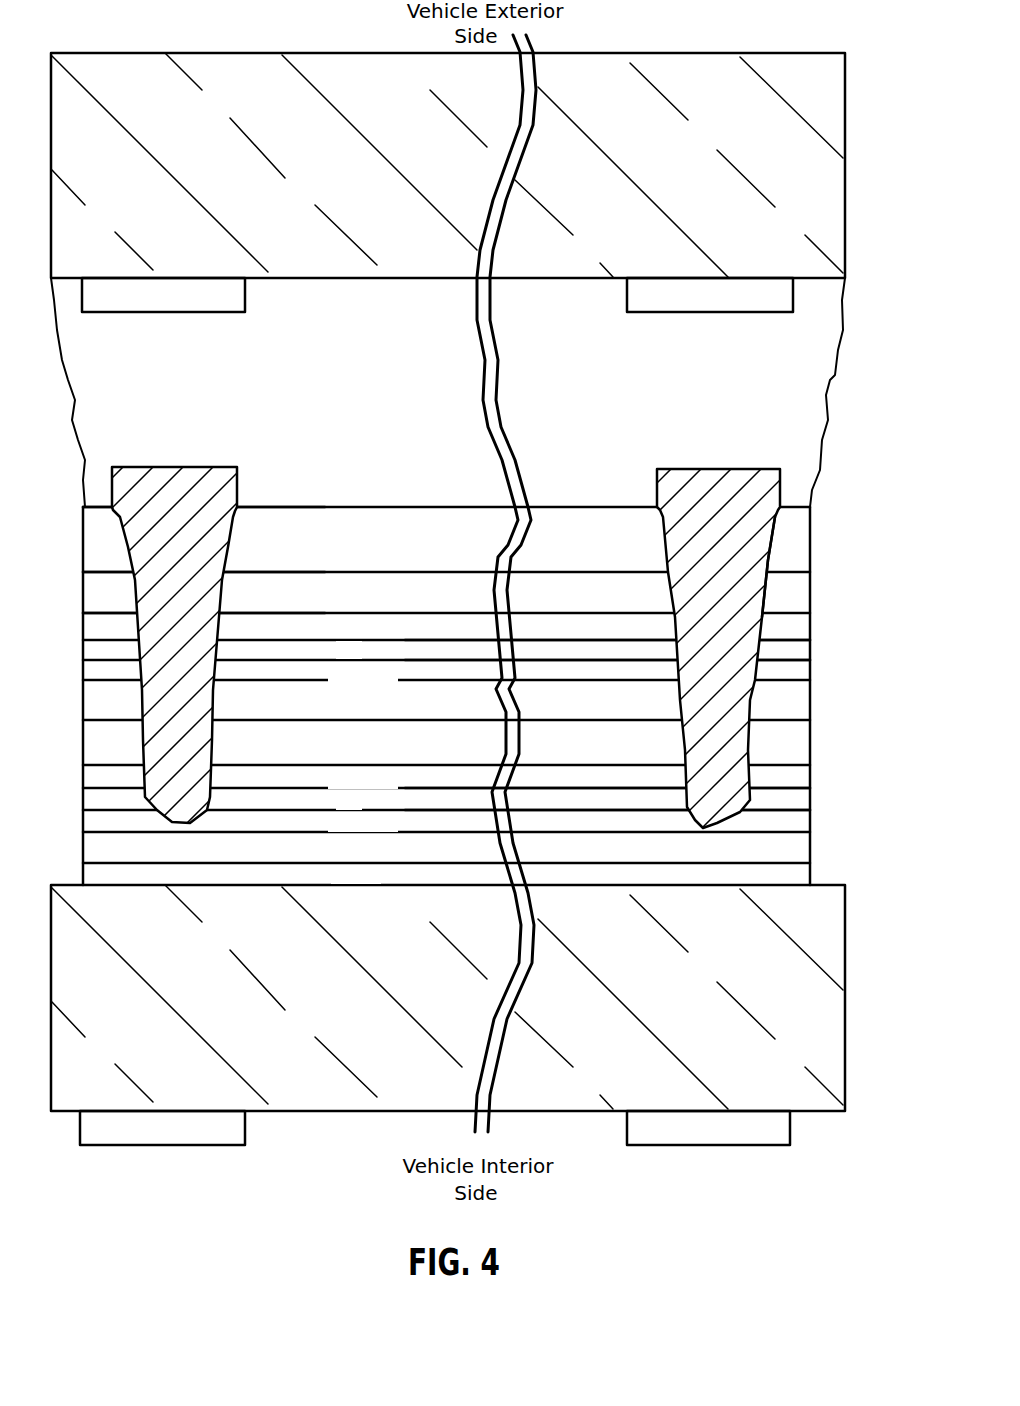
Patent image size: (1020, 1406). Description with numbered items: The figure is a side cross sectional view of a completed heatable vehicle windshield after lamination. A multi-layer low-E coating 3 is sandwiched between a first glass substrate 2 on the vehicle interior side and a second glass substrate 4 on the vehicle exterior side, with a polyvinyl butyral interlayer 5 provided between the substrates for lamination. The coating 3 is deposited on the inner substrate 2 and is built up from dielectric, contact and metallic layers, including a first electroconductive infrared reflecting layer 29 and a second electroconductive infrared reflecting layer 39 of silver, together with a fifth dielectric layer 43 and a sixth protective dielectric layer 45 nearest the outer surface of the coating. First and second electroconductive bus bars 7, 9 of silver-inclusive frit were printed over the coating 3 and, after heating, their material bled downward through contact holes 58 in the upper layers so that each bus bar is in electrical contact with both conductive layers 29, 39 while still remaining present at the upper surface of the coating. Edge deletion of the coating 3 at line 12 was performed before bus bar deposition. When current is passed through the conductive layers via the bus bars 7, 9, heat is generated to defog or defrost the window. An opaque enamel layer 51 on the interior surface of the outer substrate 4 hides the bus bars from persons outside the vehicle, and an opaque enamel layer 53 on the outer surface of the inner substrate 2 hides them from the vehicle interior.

The first glass substrate 2 is at (825, 1013).
The multi-layer low-E coating 3 is at (828, 880).
The second glass substrate 4 is at (835, 125).
The polyvinyl butyral interlayer 5 is at (806, 418).
The first electroconductive bus bar 7 is at (185, 488).
The second electroconductive bus bar 9 is at (750, 476).
The edge deletion line 12 is at (83, 863).
The first electroconductive metallic IR reflecting layer 29 is at (778, 800).
The second electroconductive metallic IR reflecting layer 39 is at (576, 655).
The fifth dielectric layer 43 is at (286, 597).
The sixth protective dielectric layer 45 is at (268, 522).
The opaque enamel layer 51 is at (173, 307).
The opaque enamel layer 53 is at (165, 1135).
The contact hole 58 is at (767, 558).